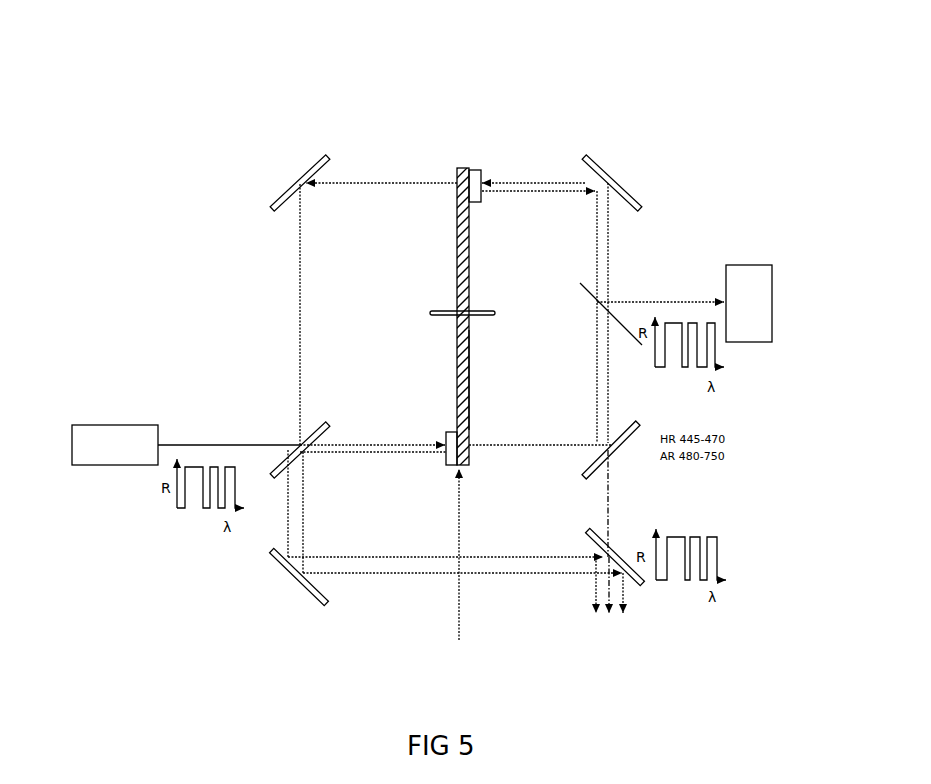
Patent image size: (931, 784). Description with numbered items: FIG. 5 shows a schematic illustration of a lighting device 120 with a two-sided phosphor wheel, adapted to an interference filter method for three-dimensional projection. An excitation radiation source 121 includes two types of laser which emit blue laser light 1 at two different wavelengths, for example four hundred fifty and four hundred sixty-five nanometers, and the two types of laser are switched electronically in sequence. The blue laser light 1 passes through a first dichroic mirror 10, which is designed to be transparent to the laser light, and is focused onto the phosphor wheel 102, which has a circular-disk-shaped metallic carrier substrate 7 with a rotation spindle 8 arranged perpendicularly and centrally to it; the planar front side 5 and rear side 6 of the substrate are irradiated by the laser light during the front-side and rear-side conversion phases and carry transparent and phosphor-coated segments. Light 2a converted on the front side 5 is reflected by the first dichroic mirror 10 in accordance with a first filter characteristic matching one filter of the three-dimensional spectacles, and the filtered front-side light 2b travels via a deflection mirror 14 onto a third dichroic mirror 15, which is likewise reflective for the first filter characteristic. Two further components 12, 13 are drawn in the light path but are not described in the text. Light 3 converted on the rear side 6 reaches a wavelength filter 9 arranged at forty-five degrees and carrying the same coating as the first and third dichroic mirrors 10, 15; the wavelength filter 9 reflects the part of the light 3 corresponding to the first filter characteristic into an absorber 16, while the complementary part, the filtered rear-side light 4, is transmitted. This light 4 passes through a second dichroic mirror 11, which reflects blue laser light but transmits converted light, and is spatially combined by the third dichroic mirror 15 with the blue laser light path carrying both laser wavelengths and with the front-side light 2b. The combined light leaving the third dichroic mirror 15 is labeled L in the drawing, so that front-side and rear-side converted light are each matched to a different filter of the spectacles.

The lighting device 120 is at (515, 90).
The excitation radiation source 121 is at (115, 465).
The blue laser light 1 is at (590, 606).
The light converted on the front side 2a is at (373, 463).
The filtered light converted on the front side 2b is at (655, 642).
The light converted on the rear side 3 is at (539, 317).
The filtered light converted on the rear side 4 is at (602, 643).
The front side 5 is at (453, 317).
The rear side 6 is at (472, 380).
The carrier substrate 7 is at (470, 283).
The rotation spindle 8 is at (442, 315).
The wavelength filter 9 is at (638, 347).
The first dichroic mirror 10 is at (267, 490).
The second dichroic mirror 11 is at (620, 448).
The mirror 12 is at (623, 183).
The mirror 13 is at (295, 183).
The deflection mirror 14 is at (295, 582).
The third dichroic mirror 15 is at (640, 580).
The absorber 16 is at (749, 342).
The phosphor wheel 102 is at (460, 572).
The output light L is at (616, 695).